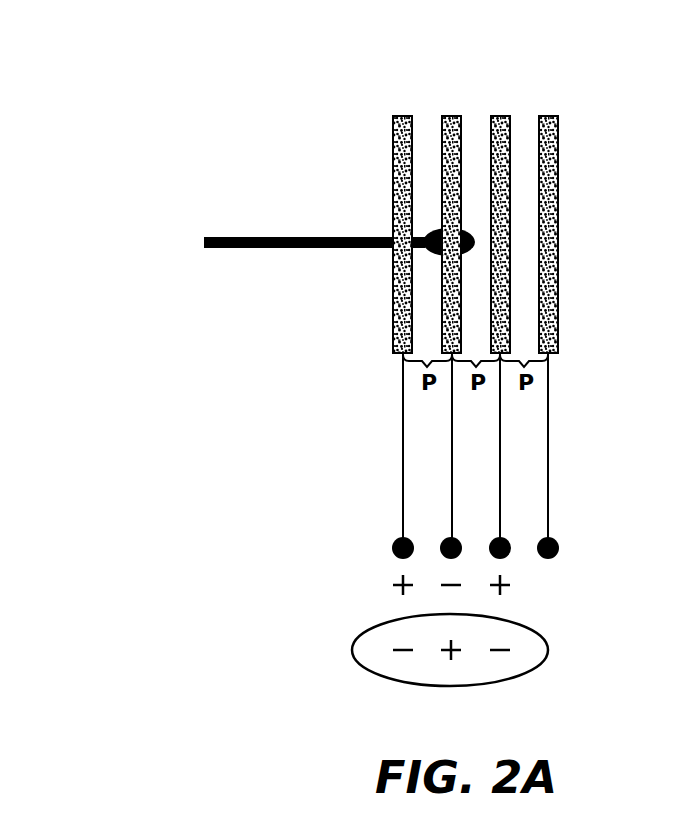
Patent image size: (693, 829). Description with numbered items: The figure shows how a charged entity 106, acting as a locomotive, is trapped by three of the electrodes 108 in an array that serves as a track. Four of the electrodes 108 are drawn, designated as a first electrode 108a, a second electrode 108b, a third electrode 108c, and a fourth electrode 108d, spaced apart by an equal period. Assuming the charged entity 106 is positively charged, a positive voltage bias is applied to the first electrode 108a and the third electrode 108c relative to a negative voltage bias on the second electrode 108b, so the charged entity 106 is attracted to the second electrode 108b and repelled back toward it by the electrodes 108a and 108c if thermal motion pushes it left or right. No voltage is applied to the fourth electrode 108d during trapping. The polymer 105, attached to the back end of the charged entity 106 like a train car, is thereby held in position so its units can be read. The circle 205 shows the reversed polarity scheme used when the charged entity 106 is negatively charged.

The polymer 105 is at (303, 237).
The charged entity 106 is at (438, 230).
The electrodes 108 is at (553, 73).
The first electrode 108a is at (395, 140).
The second electrode 108b is at (459, 147).
The third electrode 108c is at (509, 148).
The fourth electrode 108d is at (559, 139).
The circle 205 is at (353, 648).